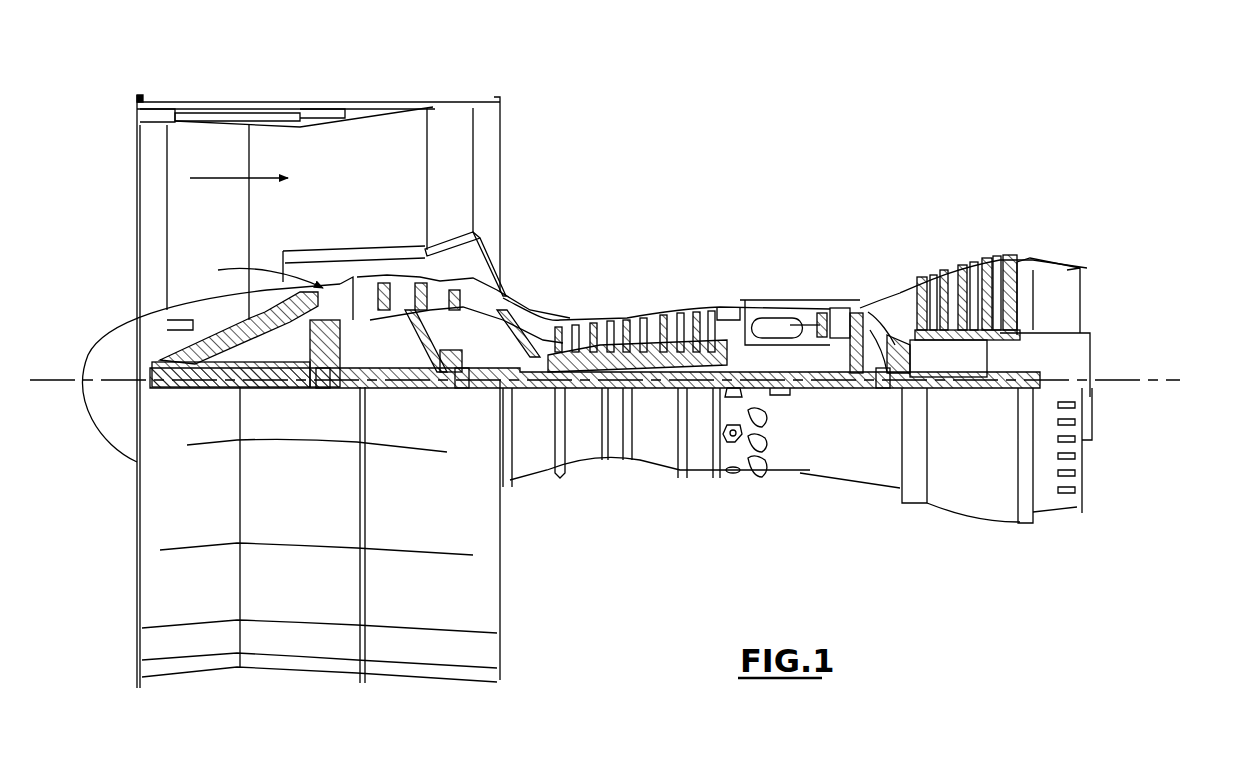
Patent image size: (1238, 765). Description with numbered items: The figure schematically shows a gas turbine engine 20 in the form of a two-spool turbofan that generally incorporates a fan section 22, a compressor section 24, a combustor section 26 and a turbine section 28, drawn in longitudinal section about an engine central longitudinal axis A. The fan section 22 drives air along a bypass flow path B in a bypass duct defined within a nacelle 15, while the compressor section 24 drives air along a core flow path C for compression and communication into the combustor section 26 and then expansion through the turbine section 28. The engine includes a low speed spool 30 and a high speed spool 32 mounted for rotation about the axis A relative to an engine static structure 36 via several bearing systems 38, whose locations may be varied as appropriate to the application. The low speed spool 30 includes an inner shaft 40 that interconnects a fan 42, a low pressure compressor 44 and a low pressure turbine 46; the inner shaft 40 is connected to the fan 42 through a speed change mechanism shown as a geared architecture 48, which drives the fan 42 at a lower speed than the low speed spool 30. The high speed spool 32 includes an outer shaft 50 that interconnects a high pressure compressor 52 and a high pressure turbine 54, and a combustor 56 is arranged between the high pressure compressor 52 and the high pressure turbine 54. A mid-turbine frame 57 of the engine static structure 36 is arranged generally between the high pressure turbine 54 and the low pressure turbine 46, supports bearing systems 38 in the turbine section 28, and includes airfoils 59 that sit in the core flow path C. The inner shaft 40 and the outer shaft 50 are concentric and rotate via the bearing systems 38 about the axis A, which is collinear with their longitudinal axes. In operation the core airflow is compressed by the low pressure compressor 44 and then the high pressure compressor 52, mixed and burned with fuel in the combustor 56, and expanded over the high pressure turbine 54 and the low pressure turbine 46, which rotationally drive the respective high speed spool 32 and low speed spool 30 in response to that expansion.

The gas turbine engine 20 is at (781, 153).
The fan section 22 is at (251, 93).
The nacelle 15 is at (315, 107).
The compressor section 24 is at (551, 294).
The combustor section 26 is at (812, 301).
The turbine section 28 is at (975, 289).
The low speed spool 30 is at (660, 392).
The high speed spool 32 is at (700, 350).
The engine static structure 36 is at (698, 470).
The bearing systems 38 is at (463, 388).
The inner shaft 40 is at (512, 390).
The fan 42 is at (223, 232).
The low pressure compressor 44 is at (437, 297).
The low pressure turbine 46 is at (967, 282).
The geared architecture 48 is at (323, 390).
The outer shaft 50 is at (784, 378).
The high pressure compressor 52 is at (626, 355).
The high pressure turbine 54 is at (840, 305).
The combustor 56 is at (772, 330).
The mid-turbine frame 57 is at (884, 292).
The airfoils 59 is at (882, 325).
The engine central longitudinal axis A is at (1170, 380).
The bypass flow path B is at (226, 177).
The core flow path C is at (260, 273).